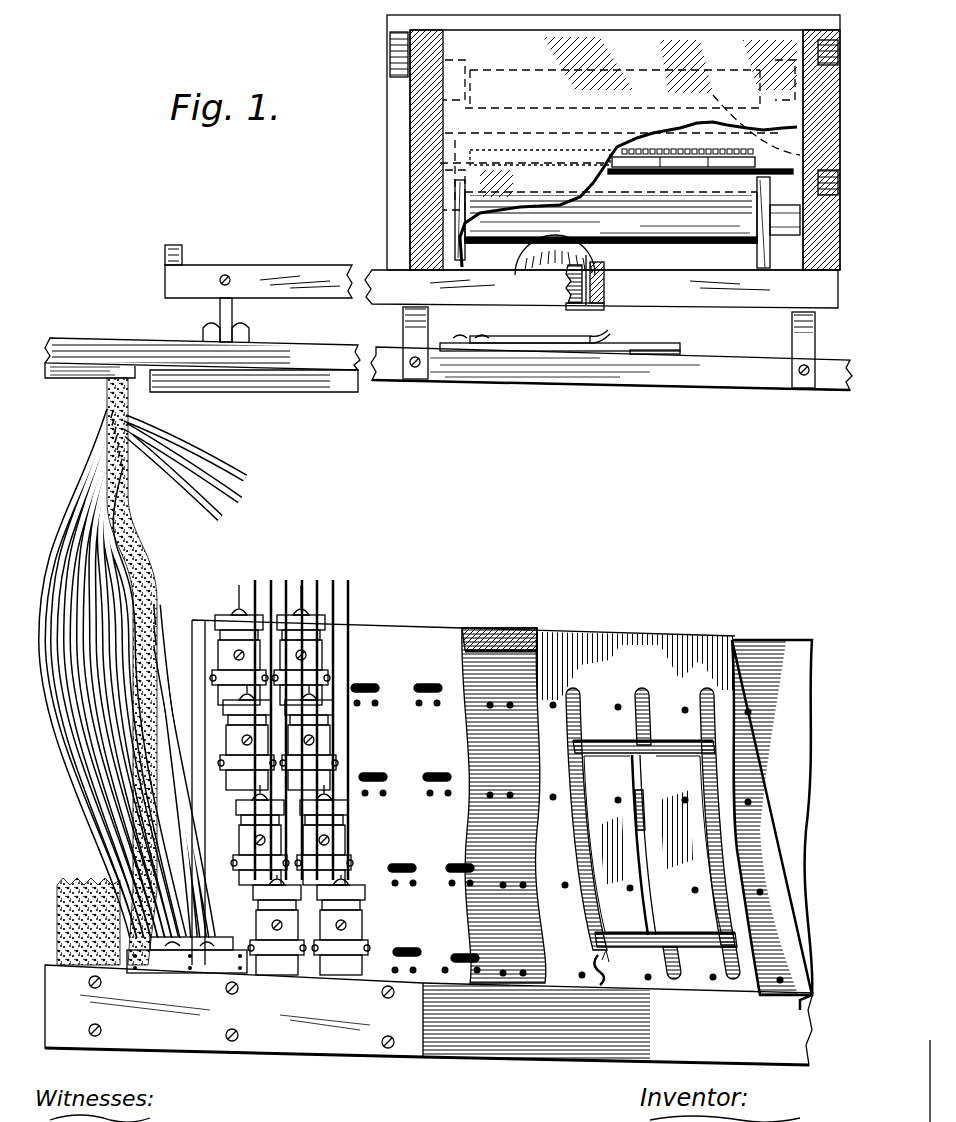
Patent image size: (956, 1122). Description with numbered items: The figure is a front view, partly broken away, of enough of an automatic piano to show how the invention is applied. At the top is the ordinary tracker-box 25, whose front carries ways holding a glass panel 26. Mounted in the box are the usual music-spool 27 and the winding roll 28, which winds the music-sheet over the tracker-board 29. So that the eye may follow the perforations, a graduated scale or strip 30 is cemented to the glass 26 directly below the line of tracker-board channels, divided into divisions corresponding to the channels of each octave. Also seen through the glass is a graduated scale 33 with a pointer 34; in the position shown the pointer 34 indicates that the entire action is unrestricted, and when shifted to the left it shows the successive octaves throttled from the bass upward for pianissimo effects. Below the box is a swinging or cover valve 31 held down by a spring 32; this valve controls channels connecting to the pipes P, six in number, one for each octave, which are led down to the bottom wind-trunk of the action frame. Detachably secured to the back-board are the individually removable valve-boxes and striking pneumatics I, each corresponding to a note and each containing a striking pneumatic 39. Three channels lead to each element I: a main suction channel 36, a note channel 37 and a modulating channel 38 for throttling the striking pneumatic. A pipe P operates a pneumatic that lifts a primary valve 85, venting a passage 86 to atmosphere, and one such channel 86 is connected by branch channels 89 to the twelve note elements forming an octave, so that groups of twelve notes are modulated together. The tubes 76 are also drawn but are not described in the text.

The tracker-box 25 is at (393, 183).
The glass panel 26 is at (435, 117).
The music-spool 27 is at (790, 140).
The winding roll 28 is at (745, 215).
The tracker-board 29 is at (663, 145).
The graduated scale or strip 30 is at (615, 152).
The swinging or cover valve 31 is at (650, 346).
The spring 32 is at (525, 337).
The graduated scale 33 is at (598, 260).
The pointer 34 is at (605, 290).
The main suction channel 36 is at (372, 686).
The note channel 37 is at (432, 784).
The modulating channel 38 is at (372, 784).
The striking pneumatic 39 is at (240, 723).
The tubes 76 is at (200, 500).
The pipes P is at (106, 520).
The individually removable valve-boxes and striking pneumatics I is at (318, 765).
The primary valve 85 is at (212, 945).
The passage or channel 86 is at (606, 970).
The branch channels 89 is at (636, 825).